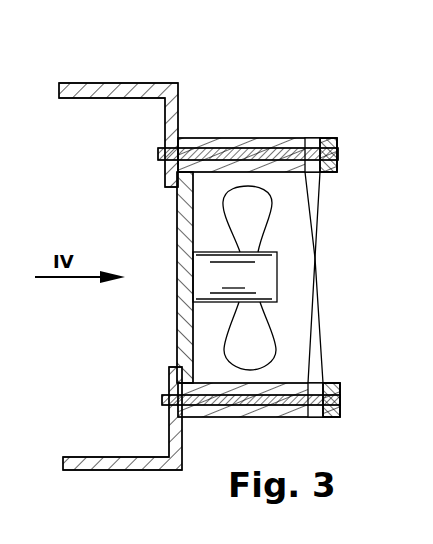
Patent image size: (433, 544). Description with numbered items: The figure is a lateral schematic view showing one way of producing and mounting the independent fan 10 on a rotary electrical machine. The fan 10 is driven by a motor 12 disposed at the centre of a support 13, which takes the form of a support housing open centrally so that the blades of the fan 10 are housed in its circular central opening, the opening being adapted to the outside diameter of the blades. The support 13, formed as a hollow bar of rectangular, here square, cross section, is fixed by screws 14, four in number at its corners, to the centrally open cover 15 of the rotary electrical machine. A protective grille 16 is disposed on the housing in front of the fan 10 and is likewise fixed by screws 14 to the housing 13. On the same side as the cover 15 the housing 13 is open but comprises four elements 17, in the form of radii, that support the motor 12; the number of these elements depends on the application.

The independent fan 10 is at (262, 202).
The motor 12 is at (280, 271).
The support 13 is at (243, 138).
The screws 14 is at (338, 150).
The cover 15 is at (120, 80).
The protective grille 16 is at (318, 325).
The elements supporting the motor 17 is at (177, 330).